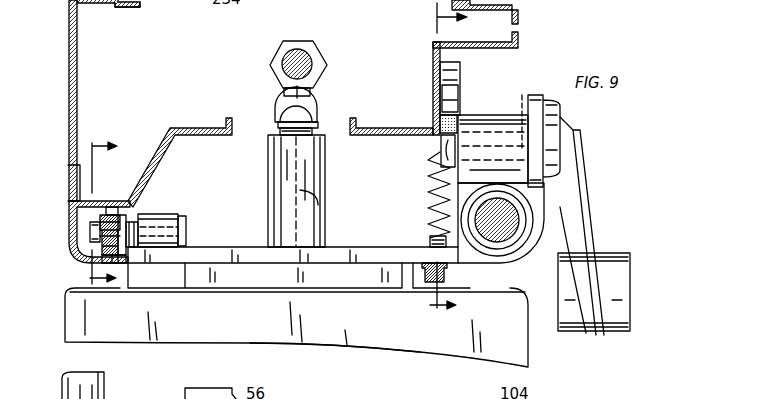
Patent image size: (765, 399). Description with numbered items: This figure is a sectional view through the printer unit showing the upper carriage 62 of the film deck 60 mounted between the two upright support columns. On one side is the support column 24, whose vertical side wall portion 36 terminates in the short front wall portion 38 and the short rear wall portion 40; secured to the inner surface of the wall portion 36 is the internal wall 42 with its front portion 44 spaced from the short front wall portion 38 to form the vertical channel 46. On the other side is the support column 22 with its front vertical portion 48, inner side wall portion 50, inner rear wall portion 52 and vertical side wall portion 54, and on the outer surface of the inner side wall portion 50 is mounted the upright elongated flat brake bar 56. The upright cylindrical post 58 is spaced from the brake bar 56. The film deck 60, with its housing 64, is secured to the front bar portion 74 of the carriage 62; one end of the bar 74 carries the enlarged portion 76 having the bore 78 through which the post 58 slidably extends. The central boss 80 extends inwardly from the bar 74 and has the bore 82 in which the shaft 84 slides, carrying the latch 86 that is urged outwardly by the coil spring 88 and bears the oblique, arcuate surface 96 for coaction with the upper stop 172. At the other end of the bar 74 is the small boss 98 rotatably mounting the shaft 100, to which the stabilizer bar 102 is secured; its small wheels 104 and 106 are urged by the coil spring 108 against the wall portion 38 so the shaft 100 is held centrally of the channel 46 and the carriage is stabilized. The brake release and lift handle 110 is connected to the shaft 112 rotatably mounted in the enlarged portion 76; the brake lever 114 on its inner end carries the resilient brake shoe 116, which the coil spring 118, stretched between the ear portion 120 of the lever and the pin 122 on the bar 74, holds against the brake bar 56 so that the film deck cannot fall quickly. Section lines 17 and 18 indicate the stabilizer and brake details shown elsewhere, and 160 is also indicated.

The section line 17 is at (89, 204).
The section line 18 is at (436, 167).
The upright support column 22 is at (518, 45).
The upright support column 24 is at (68, 84).
The vertical side wall portion 36 is at (68, 153).
The short front wall portion 38 is at (125, 262).
The short rear wall portion 40 is at (112, 9).
The internal wall 42 is at (155, 153).
The front portion 44 is at (107, 214).
The vertical channel 46 is at (84, 237).
The front vertical portion 48 is at (383, 136).
The inner side wall portion 50 is at (434, 70).
The inner rear wall portion 52 is at (481, 48).
The vertical side wall portion 54 is at (519, 16).
The brake bar 56 is at (456, 94).
The cylindrical post 58 is at (499, 240).
The film deck 60 is at (313, 342).
The upper carriage member 62 is at (207, 250).
The housing 64 is at (248, 334).
The front bar portion 74 is at (383, 258).
The enlarged portion 76 is at (443, 284).
The bore 78 is at (513, 236).
The central boss 80 is at (275, 163).
The bore 82 is at (320, 192).
The shaft 84 is at (322, 126).
The latch 86 is at (316, 105).
The coil spring 88 is at (279, 129).
The oblique surface 96 is at (309, 91).
The small boss 98 is at (160, 217).
The shaft 100 is at (90, 231).
The stabilizer bar 102 is at (106, 211).
The small wheel 104 is at (120, 257).
The small wheel 106 is at (118, 207).
The coil spring 108 is at (143, 217).
The brake release and lift handle 110 is at (630, 276).
The shaft 112 is at (536, 128).
The brake lever 114 is at (457, 133).
The resilient brake shoe 116 is at (438, 121).
The coil spring 118 is at (428, 208).
The ear portion 120 is at (430, 152).
The pin 122 is at (428, 236).
The pin 160 is at (305, 52).
The upper stop 172 is at (313, 58).